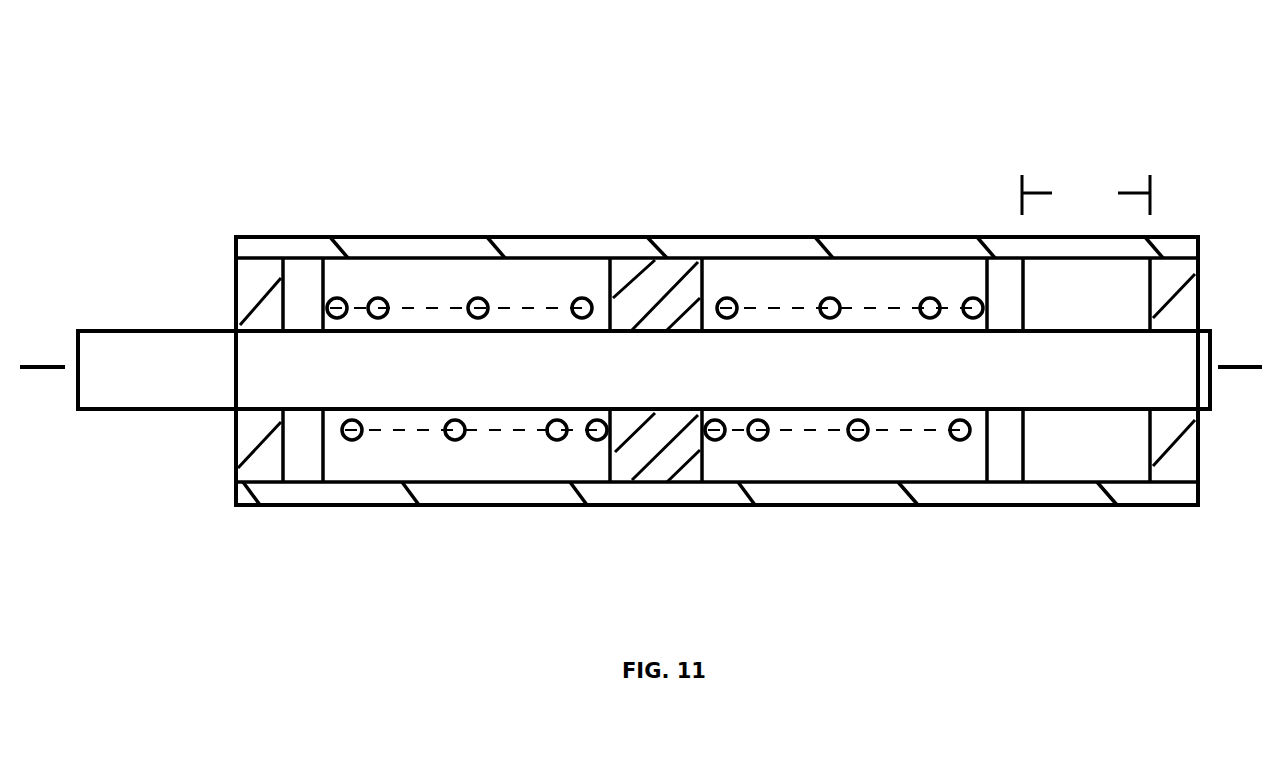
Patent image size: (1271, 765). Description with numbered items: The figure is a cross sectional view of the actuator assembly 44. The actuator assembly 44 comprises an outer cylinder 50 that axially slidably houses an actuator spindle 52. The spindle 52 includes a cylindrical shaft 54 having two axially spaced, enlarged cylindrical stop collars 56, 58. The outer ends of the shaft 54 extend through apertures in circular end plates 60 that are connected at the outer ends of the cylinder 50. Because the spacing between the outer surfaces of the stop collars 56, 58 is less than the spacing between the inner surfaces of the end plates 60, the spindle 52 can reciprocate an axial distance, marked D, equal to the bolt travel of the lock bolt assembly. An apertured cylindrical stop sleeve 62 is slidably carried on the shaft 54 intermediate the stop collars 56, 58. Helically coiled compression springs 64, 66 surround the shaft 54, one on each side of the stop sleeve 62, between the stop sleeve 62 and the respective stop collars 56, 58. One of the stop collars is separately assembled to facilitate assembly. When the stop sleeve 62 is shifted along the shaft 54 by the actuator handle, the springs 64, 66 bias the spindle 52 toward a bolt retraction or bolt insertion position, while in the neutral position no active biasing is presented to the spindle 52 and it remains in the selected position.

The actuator assembly 44 is at (583, 198).
The outer cylinder 50 is at (418, 245).
The actuator spindle 52 is at (215, 353).
The cylindrical shaft 54 is at (127, 347).
The stop collar 56 is at (308, 466).
The stop collar 58 is at (1000, 462).
The circular end plates 60 is at (233, 450).
The stop sleeve 62 is at (665, 268).
The compression spring 64 is at (452, 497).
The compression spring 66 is at (858, 445).